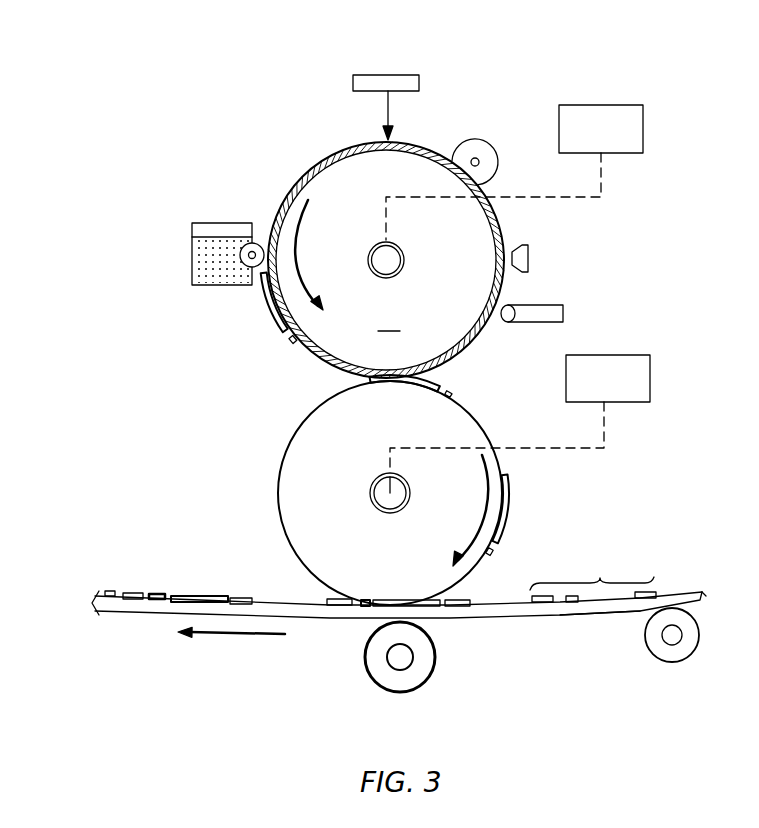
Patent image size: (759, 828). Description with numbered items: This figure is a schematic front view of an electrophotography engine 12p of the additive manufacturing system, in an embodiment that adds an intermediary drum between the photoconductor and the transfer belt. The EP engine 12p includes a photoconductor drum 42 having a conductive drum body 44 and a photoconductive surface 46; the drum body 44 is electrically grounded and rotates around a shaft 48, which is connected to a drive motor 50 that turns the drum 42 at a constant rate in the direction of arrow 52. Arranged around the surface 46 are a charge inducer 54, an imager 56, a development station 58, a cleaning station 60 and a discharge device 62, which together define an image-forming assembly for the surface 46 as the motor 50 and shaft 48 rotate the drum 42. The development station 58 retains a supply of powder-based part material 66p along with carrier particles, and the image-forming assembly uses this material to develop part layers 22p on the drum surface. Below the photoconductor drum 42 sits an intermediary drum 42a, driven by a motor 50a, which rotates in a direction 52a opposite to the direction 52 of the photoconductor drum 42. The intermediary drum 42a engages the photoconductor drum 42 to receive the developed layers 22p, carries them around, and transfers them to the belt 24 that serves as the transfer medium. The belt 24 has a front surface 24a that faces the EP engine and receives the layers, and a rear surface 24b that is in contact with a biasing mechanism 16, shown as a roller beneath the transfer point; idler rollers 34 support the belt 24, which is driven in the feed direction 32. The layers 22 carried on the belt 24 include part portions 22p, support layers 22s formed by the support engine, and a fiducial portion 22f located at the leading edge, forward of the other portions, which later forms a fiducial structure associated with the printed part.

The EP engine 12p is at (140, 63).
The photoconductor drum 42 is at (349, 244).
The intermediary drum 42a is at (346, 493).
The conductive drum body 44 is at (389, 321).
The photoconductive surface 46 is at (335, 150).
The shaft 48 is at (392, 258).
The drive motor 50 is at (632, 103).
The motor 50a is at (638, 350).
The direction of rotation 52 is at (300, 250).
The direction of rotation 52a is at (478, 482).
The charge inducer 54 is at (465, 140).
The imager 56 is at (405, 70).
The development station 58 is at (184, 228).
The cleaning station 60 is at (548, 305).
The discharge device 62 is at (528, 252).
The part material 66p is at (215, 250).
The part layers 22p is at (256, 307).
The layers 22 is at (374, 612).
The fiducial portion 22f is at (110, 590).
The support layers 22s is at (336, 628).
The belt 24 is at (400, 626).
The front surface 24a is at (696, 590).
The rear surface 24b is at (576, 630).
The feed direction 32 is at (227, 637).
The biasing mechanism 16 is at (417, 665).
The idler roller 34 is at (676, 656).